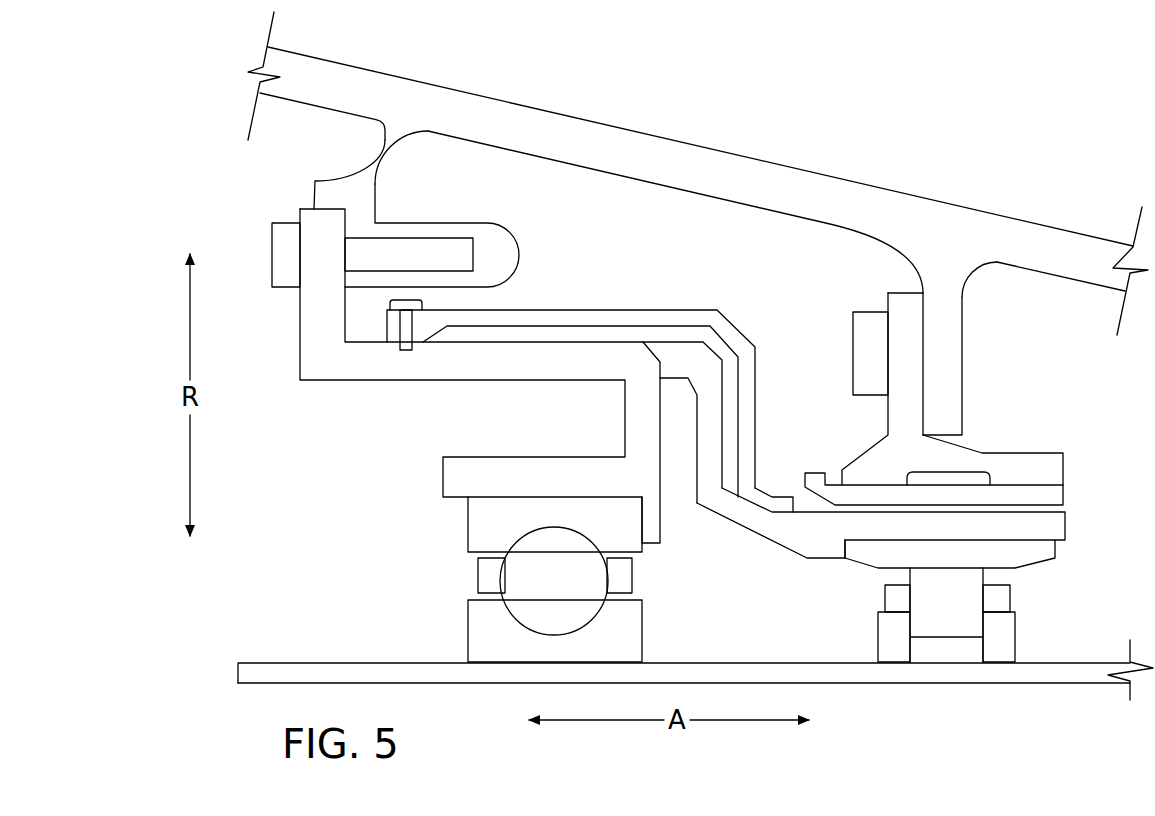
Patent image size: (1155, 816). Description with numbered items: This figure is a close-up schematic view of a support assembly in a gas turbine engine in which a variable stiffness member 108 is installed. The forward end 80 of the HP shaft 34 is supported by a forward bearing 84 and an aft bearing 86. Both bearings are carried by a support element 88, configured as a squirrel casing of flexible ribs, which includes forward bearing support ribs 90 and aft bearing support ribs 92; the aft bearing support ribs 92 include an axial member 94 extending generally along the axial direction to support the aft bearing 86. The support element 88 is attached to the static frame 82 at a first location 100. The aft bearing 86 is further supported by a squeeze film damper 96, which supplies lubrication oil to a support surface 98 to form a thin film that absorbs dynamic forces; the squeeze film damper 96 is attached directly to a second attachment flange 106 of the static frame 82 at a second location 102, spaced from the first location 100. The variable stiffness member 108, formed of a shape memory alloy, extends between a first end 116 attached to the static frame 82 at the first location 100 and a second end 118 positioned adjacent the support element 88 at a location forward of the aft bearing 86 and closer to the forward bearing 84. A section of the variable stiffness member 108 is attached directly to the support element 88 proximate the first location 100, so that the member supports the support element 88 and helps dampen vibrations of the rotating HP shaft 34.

The HP shaft 34 is at (935, 684).
The forward end 80 is at (434, 693).
The static frame 82 is at (567, 110).
The forward bearing 84 is at (447, 567).
The aft bearing 86 is at (1048, 615).
The support element 88 is at (503, 176).
The forward bearing support ribs 90 is at (557, 455).
The aft bearing support ribs 92 is at (705, 383).
The axial member 94 is at (812, 542).
The squeeze film damper 96 is at (1057, 468).
The support surface 98 is at (1037, 508).
The first location 100 is at (425, 155).
The second location 102 is at (974, 292).
The second attachment flange 106 is at (955, 347).
The variable stiffness member 108 is at (684, 305).
The first end 116 is at (458, 303).
The second end 118 is at (780, 487).